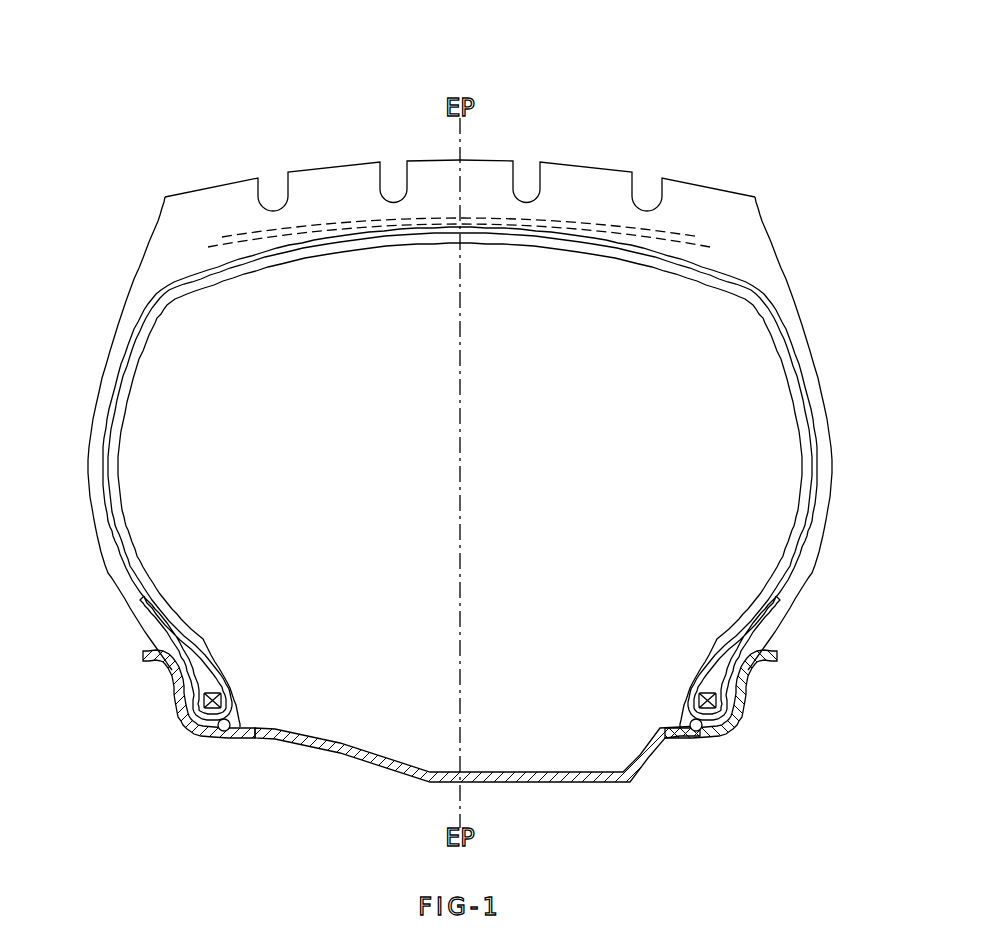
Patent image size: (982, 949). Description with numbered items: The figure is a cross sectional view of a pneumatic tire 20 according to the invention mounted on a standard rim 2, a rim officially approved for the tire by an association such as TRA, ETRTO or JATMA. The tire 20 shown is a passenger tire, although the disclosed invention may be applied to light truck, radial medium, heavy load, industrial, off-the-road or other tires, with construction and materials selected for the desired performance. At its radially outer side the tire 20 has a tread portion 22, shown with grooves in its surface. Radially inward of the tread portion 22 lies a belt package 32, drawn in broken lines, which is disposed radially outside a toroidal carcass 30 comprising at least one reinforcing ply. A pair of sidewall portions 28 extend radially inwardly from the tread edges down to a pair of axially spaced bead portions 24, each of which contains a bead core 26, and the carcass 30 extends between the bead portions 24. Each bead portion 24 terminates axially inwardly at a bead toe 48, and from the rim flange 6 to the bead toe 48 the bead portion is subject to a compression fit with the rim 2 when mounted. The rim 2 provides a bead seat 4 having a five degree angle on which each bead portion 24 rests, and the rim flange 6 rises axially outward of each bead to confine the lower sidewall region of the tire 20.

The standard rim 2 is at (458, 756).
The bead seat 4 is at (224, 731).
The rim flange 6 is at (175, 698).
The pneumatic tire 20 is at (138, 140).
The tread portion 22 is at (580, 152).
The bead portions 24 is at (262, 662).
The bead core 26 is at (218, 693).
The sidewall portions 28 is at (75, 393).
The toroidal carcass 30 is at (167, 280).
The belt package 32 is at (339, 215).
The bead toe 48 is at (250, 722).